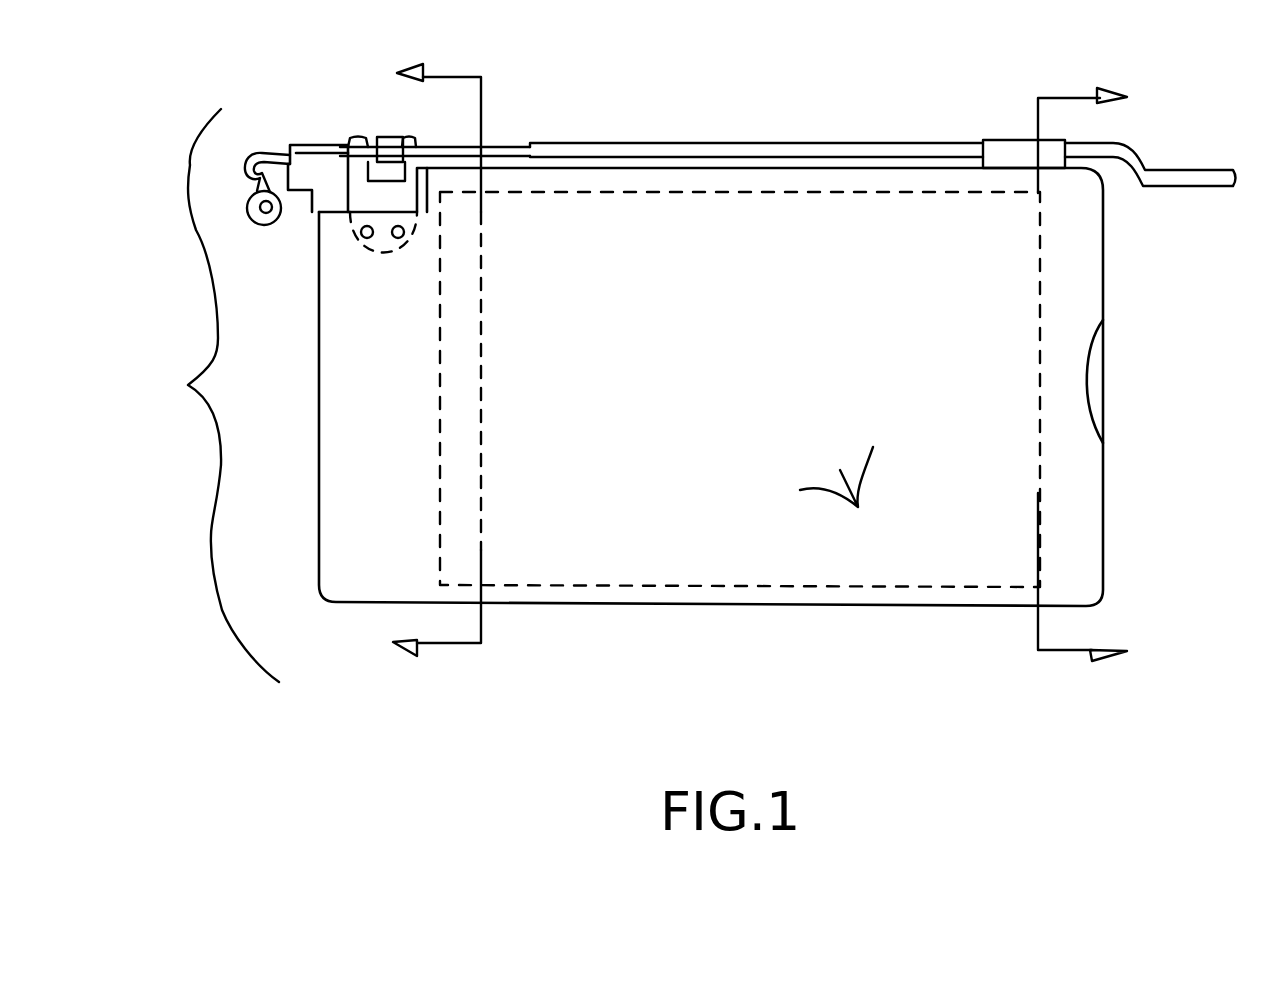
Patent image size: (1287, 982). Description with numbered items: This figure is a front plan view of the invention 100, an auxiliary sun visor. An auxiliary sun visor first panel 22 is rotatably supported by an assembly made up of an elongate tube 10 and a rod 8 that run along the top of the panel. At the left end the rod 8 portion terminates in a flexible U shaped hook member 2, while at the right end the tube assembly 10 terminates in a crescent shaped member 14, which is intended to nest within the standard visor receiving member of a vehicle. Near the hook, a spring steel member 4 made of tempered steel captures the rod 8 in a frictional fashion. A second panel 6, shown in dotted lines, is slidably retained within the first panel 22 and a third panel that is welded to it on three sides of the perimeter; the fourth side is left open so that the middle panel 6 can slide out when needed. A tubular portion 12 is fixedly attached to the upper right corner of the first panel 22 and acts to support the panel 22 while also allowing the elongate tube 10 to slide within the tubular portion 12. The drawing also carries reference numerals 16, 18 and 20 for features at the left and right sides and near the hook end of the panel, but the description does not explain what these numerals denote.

The invention 100 is at (203, 395).
The flexible U shaped hook member 2 is at (266, 225).
The spring steel member 4 is at (362, 133).
The second panel 6 is at (1097, 380).
The rod 8 is at (499, 148).
The elongate tube 10 is at (593, 142).
The tubular portion 12 is at (1000, 140).
The crescent shaped member 14 is at (1170, 160).
The left support member 16 is at (460, 650).
The right support member 18 is at (1045, 651).
The mounting bracket 20 is at (357, 280).
The auxiliary sun visor first panel 22 is at (858, 507).